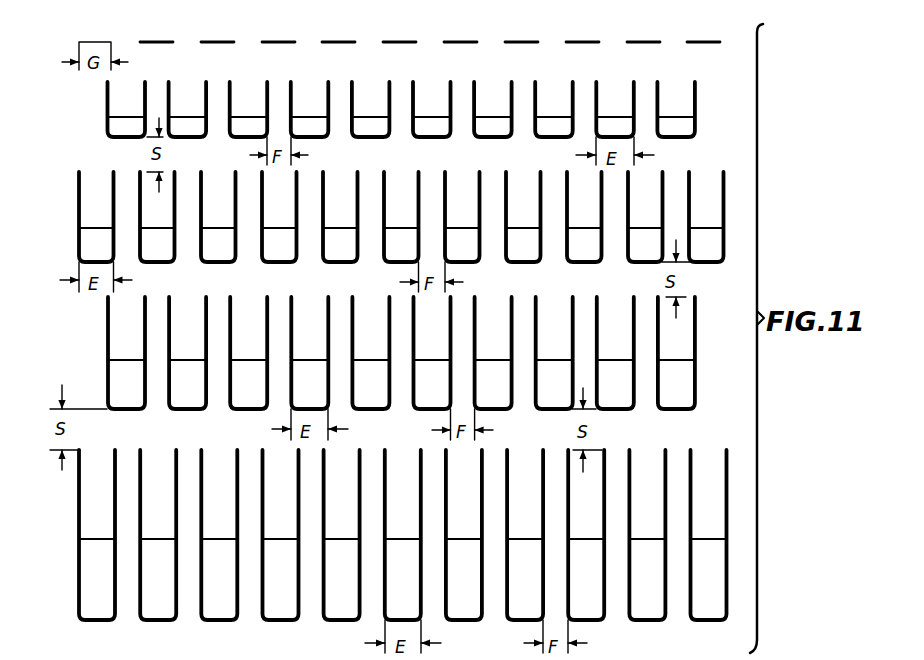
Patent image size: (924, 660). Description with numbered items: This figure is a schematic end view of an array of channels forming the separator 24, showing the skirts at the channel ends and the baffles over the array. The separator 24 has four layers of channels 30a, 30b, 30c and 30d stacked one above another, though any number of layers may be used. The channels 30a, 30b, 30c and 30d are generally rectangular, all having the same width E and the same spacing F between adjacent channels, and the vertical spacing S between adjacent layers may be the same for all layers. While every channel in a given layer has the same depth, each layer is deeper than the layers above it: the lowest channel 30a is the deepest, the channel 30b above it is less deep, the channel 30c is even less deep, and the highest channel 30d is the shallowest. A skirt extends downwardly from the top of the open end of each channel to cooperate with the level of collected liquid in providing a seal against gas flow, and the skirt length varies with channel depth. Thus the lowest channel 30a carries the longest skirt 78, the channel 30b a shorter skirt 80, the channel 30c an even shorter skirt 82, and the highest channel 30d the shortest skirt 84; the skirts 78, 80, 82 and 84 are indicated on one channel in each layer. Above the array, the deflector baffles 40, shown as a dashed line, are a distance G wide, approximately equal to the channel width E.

The deflector baffles 40 is at (276, 42).
The separator 24 is at (375, 348).
The lowest channel 30a is at (411, 517).
The second channel 30b is at (426, 339).
The third channel 30c is at (409, 241).
The highest channel 30d is at (427, 124).
The skirt 78 is at (347, 483).
The skirt 80 is at (193, 323).
The skirt 82 is at (577, 213).
The skirt 84 is at (543, 98).